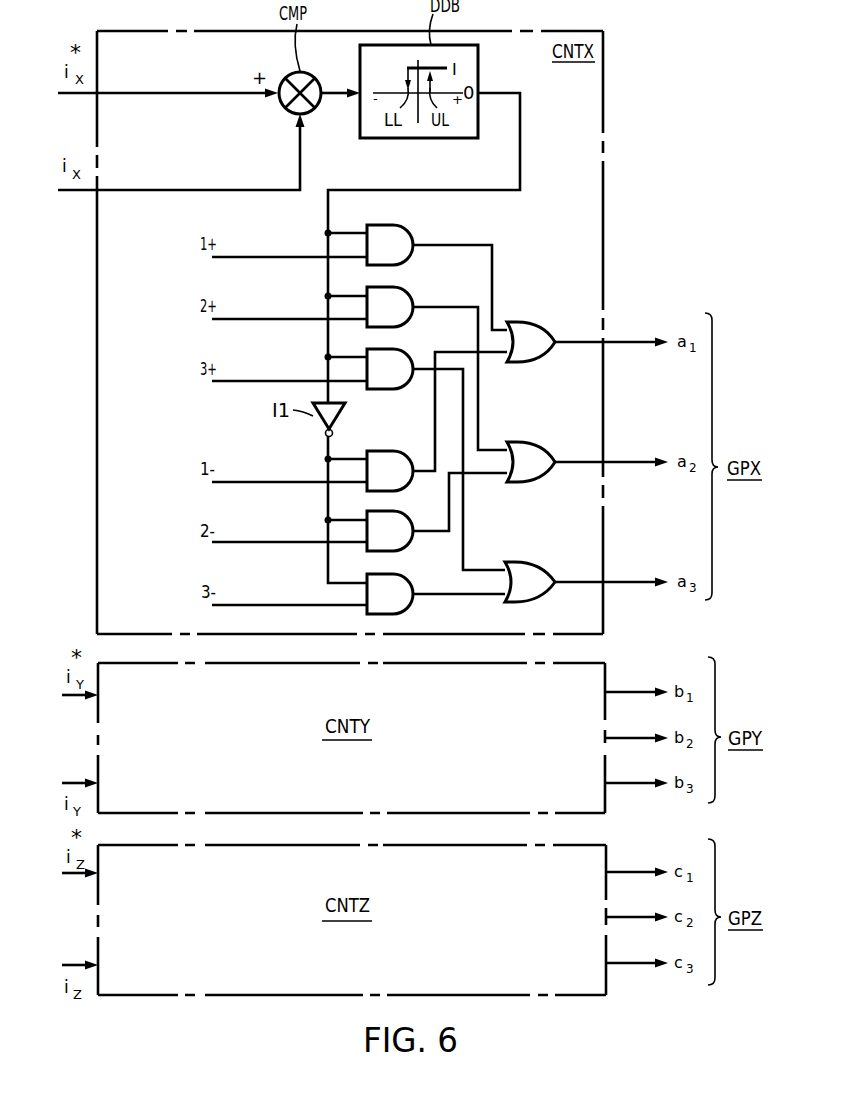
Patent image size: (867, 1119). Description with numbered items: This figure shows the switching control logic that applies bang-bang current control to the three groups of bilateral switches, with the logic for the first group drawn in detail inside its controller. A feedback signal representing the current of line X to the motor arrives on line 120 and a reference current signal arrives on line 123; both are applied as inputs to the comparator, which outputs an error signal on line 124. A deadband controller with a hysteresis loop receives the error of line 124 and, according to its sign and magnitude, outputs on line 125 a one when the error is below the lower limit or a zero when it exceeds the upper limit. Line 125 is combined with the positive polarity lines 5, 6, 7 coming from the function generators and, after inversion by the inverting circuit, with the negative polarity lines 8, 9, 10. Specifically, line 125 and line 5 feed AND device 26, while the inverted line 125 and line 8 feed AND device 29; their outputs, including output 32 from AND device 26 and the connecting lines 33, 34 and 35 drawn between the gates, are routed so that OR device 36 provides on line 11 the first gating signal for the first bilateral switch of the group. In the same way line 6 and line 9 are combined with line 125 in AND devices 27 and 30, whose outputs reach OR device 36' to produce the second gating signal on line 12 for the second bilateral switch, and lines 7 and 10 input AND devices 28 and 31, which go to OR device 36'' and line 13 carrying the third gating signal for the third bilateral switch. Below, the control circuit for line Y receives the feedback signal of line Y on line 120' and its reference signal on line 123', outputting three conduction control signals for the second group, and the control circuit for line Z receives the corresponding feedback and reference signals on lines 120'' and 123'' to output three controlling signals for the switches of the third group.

The reference signal line 123 is at (168, 77).
The feedback signal line 120 is at (181, 152).
The error signal line 124 is at (335, 92).
The deadband controller output line 125 is at (498, 93).
The positive polarity line 5 is at (267, 256).
The positive polarity line 6 is at (267, 318).
The positive polarity line 7 is at (267, 380).
The negative polarity line 8 is at (267, 481).
The negative polarity line 9 is at (267, 541).
The negative polarity line 10 is at (273, 604).
The AND device 26 is at (392, 225).
The AND device 27 is at (397, 288).
The AND device 28 is at (397, 350).
The AND device 29 is at (390, 452).
The AND device 30 is at (400, 512).
The AND device 31 is at (400, 575).
The AND device output 32 is at (459, 244).
The connection line 33 is at (447, 306).
The connection line 34 is at (463, 514).
The connection line 35 is at (452, 596).
The OR device 36 is at (531, 326).
The OR device 36' is at (531, 448).
The OR device 36'' is at (530, 566).
The output line 11 is at (580, 341).
The output line 12 is at (580, 461).
The output line 13 is at (581, 581).
The reference signal line 123' is at (78, 710).
The feedback signal line 120' is at (79, 770).
The reference signal line 123'' is at (78, 890).
The feedback signal line 120'' is at (79, 950).